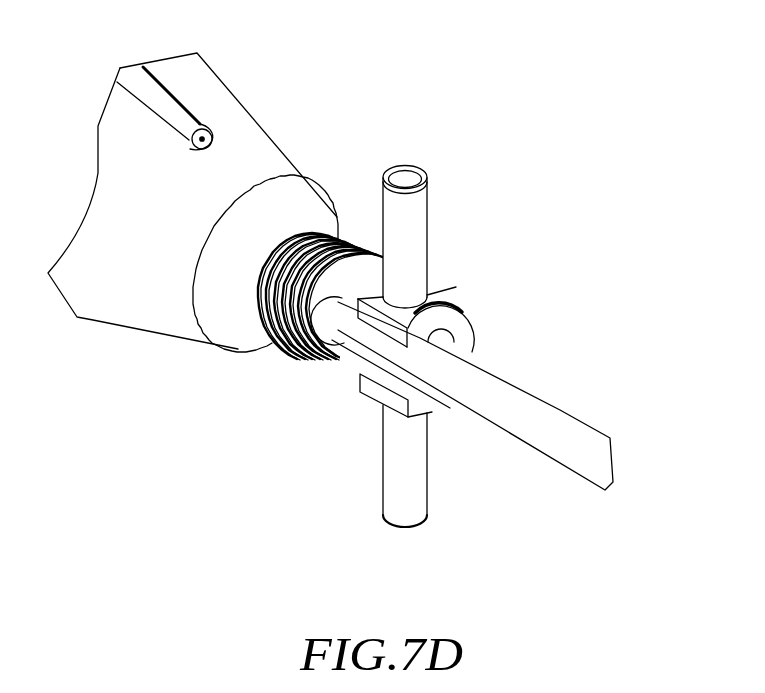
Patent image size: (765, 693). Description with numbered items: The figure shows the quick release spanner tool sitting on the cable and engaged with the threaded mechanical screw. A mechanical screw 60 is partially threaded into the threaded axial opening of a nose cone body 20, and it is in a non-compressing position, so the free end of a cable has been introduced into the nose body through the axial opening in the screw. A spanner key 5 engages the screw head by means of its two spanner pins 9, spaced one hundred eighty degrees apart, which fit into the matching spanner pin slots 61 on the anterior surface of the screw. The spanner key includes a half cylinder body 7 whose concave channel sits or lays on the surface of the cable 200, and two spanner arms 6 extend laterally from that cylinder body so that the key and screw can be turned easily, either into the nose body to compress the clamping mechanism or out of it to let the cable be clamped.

The nose body 20 is at (270, 205).
The mechanical screw 60 is at (282, 365).
The spanner pin slots 61 is at (354, 241).
The spanner key 5 is at (453, 308).
The spanner arms 6 is at (438, 505).
The cylinder body 7 is at (403, 368).
The spanner pins 9 is at (348, 299).
The cable 200 is at (525, 369).